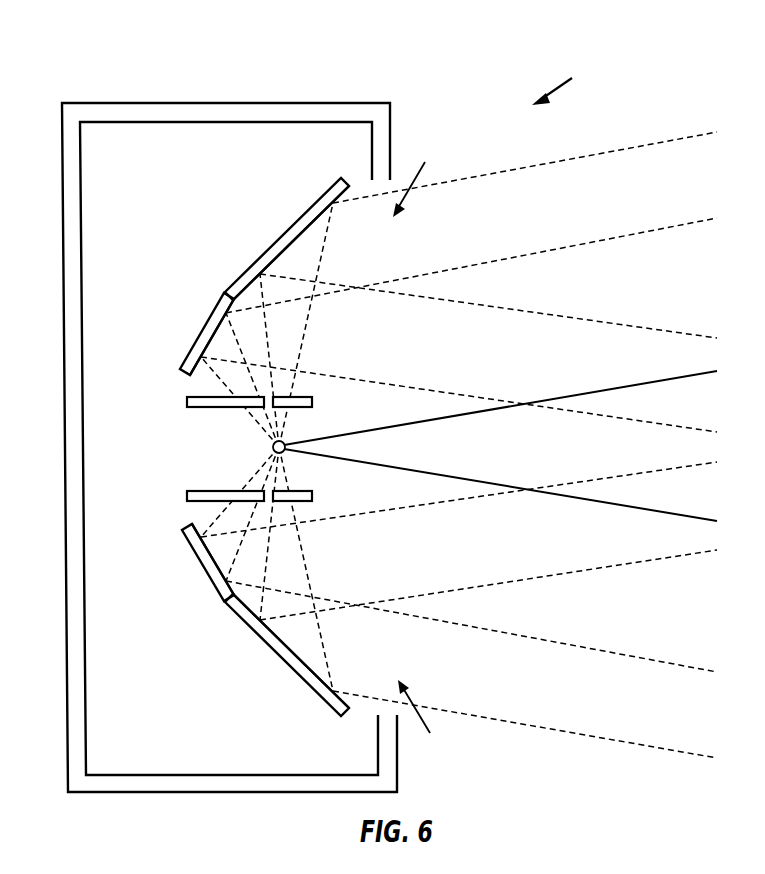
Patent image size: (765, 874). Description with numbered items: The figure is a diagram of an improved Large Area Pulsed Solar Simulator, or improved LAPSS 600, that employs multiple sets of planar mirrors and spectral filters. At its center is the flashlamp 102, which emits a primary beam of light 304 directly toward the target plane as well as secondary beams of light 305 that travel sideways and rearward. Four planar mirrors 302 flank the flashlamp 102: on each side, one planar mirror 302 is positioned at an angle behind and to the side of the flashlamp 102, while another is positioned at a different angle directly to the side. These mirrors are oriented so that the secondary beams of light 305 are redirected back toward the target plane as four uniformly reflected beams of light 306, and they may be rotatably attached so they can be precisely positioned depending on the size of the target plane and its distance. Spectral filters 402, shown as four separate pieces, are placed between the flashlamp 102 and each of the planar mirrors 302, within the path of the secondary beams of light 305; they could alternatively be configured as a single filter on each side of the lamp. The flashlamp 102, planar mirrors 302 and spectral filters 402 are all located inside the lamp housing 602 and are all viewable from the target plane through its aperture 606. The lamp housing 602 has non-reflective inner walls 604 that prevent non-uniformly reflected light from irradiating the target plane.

The improved LAPSS 600 is at (572, 83).
The lamp housing 602 is at (193, 103).
The non-reflective inner walls 604 is at (245, 123).
The aperture 606 is at (433, 448).
The planar mirrors 302 is at (277, 241).
The secondary beams of light 305 is at (320, 252).
The spectral filters 402 is at (273, 490).
The flashlamp 102 is at (285, 453).
The primary beam of light 304 is at (500, 433).
The reflected beams of light 306 is at (459, 447).